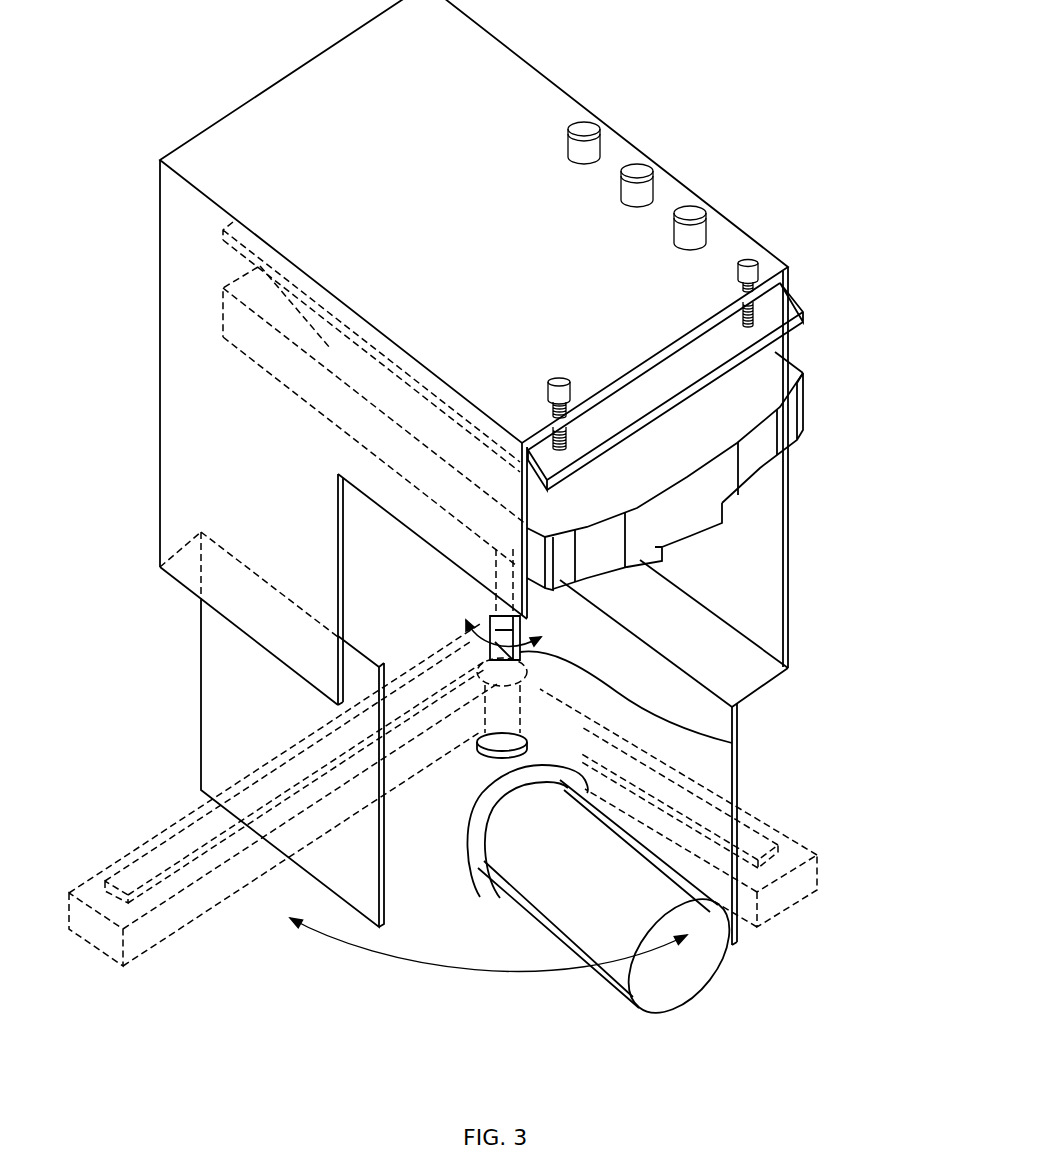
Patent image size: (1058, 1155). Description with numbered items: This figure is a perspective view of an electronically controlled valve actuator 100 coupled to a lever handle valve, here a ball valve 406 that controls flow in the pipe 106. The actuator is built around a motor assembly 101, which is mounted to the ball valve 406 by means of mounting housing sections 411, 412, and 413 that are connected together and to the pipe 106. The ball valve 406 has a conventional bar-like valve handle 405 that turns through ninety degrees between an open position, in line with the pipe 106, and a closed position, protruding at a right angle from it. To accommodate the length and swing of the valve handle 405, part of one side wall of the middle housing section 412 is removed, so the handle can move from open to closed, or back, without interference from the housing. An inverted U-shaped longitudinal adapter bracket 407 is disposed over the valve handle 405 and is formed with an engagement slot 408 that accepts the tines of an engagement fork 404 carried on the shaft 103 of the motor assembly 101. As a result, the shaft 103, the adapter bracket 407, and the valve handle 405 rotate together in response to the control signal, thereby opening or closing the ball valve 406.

The valve actuator 100 is at (681, 100).
The motor assembly 101 is at (768, 384).
The shaft 103 is at (486, 602).
The pipe 106 is at (685, 982).
The engagement fork 404 is at (742, 744).
The valve handle 405 is at (778, 831).
The ball valve 406 is at (465, 812).
The adapter bracket 407 is at (803, 880).
The engagement slot 408 is at (458, 613).
The mounting housing section 411 is at (160, 240).
The middle housing section 412 is at (168, 573).
The mounting housing section 413 is at (201, 718).